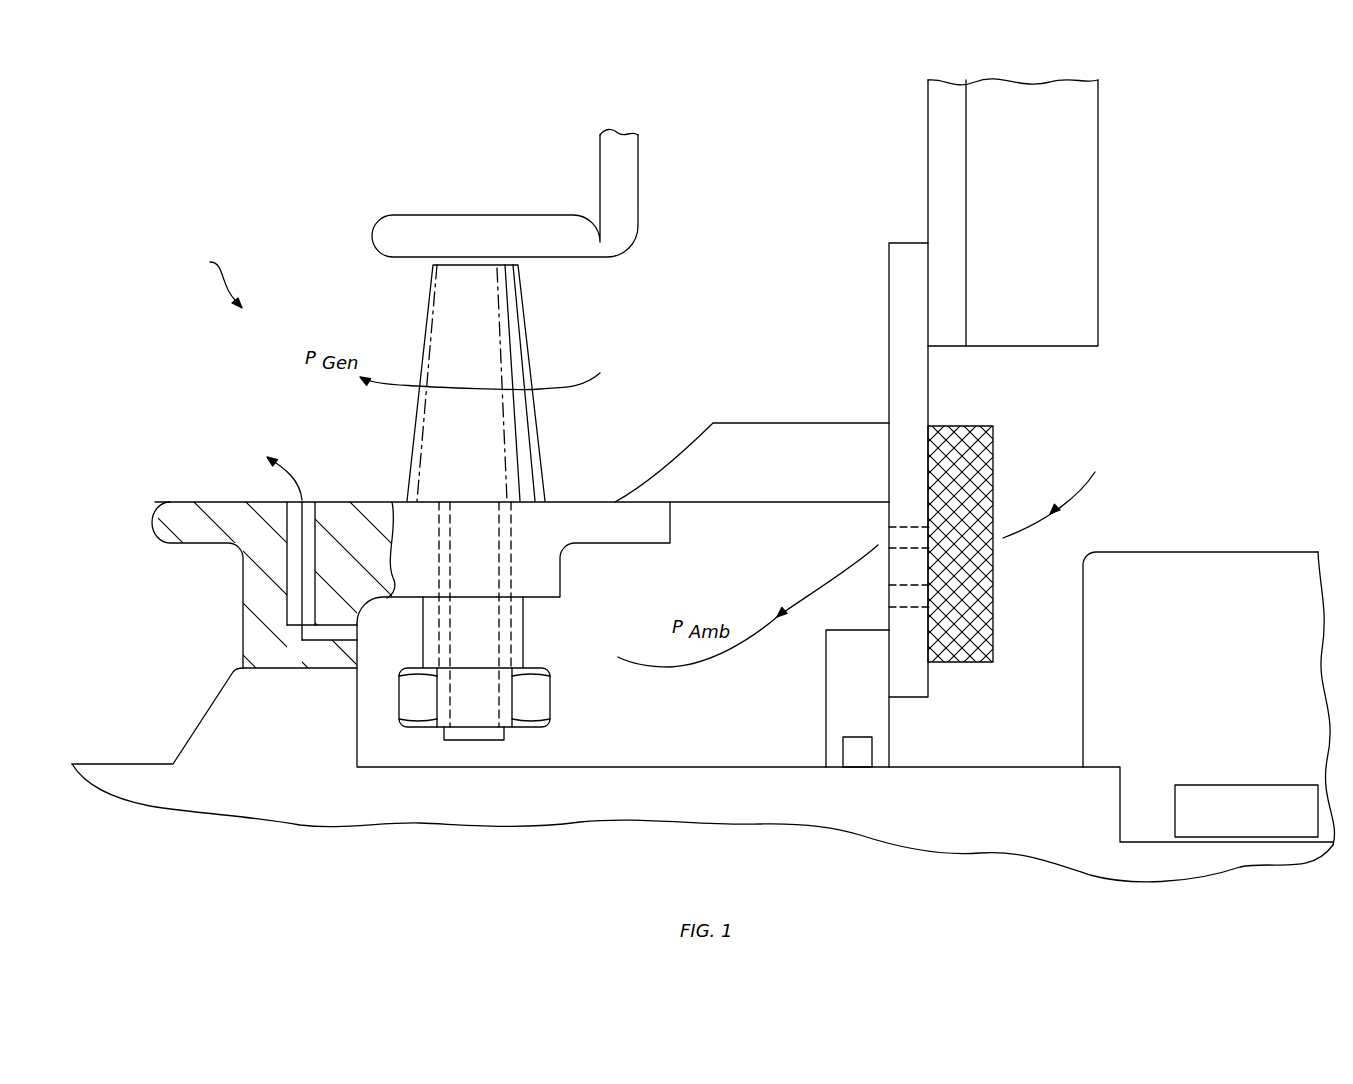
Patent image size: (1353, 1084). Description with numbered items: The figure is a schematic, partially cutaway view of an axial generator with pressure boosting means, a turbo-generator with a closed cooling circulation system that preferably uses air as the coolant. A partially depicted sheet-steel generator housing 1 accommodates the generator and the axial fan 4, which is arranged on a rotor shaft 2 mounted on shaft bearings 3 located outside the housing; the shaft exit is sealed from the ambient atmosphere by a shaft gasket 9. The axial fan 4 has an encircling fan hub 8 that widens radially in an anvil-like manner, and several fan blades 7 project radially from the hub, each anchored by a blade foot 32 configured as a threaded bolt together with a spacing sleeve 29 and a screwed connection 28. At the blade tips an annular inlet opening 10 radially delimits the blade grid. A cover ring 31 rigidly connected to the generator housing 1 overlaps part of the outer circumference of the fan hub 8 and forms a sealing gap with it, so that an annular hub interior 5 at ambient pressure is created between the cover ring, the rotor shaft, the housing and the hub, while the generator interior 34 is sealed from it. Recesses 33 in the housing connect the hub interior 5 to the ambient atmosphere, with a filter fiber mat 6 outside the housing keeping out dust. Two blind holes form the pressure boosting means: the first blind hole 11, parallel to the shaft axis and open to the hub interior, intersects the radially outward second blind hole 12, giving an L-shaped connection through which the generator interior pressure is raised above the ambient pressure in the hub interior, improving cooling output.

The generator housing 1 is at (900, 288).
The rotor shaft 2 is at (718, 804).
The shaft bearings 3 is at (1210, 672).
The axial fan 4 is at (216, 283).
The hub interior 5 is at (764, 584).
The filter fiber mat 6 is at (990, 460).
The fan blades 7 is at (517, 326).
The fan hub 8 is at (178, 508).
The shaft gasket 9 is at (835, 678).
The annular inlet opening 10 is at (416, 224).
The first blind hole 11 is at (293, 641).
The second blind hole 12 is at (293, 587).
The screwed connection 28 is at (545, 694).
The spacing sleeve 29 is at (505, 655).
The cover ring 31 is at (790, 440).
The blade foot 32 is at (485, 613).
The recesses 33 is at (884, 535).
The generator interior 34 is at (190, 438).